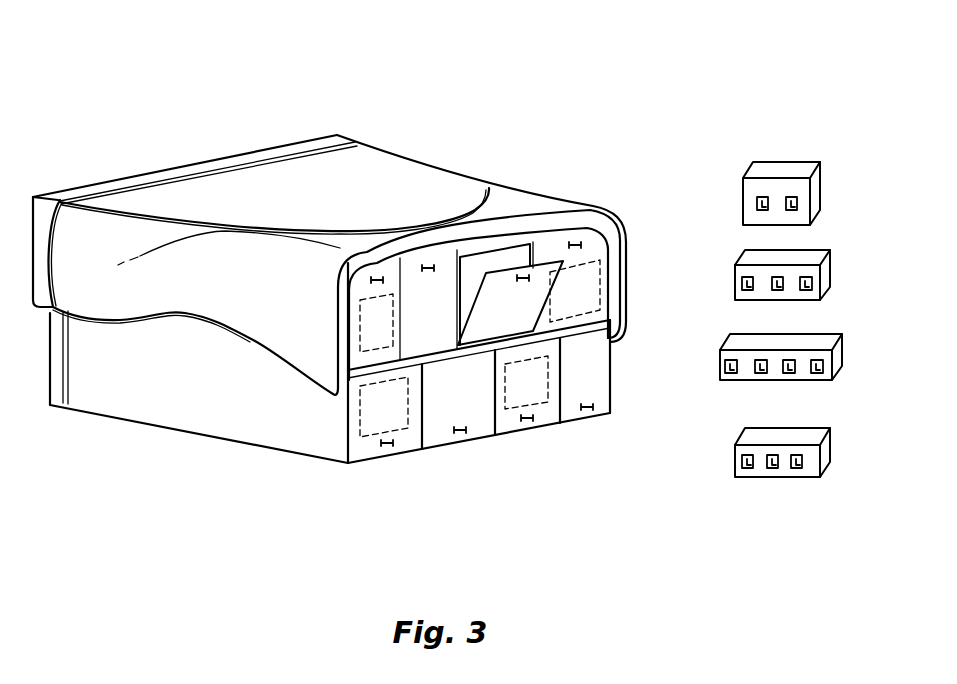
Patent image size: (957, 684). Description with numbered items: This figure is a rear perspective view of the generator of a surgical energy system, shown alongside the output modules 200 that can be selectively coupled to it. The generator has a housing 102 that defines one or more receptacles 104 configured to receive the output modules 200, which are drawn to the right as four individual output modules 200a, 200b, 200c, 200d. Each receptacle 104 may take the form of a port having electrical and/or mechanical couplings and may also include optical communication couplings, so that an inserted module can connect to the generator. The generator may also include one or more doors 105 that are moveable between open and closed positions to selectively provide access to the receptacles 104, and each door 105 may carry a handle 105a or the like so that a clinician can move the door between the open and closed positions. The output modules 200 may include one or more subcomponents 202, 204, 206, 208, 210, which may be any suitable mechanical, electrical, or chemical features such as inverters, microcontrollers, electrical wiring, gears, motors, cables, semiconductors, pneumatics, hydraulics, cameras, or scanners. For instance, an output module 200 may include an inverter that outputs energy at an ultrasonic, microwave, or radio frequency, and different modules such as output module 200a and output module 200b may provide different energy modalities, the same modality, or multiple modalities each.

The housing 102 is at (410, 167).
The receptacles 104 is at (583, 280).
The doors 105 is at (550, 415).
The handle 105a is at (387, 448).
The output modules 200 is at (813, 150).
The output module 200a is at (817, 182).
The output module 200b is at (822, 268).
The output module 200c is at (835, 352).
The output module 200d is at (826, 447).
The subcomponent 202 is at (760, 207).
The subcomponent 204 is at (797, 203).
The subcomponent 206 is at (745, 282).
The subcomponent 208 is at (778, 283).
The subcomponent 210 is at (807, 283).